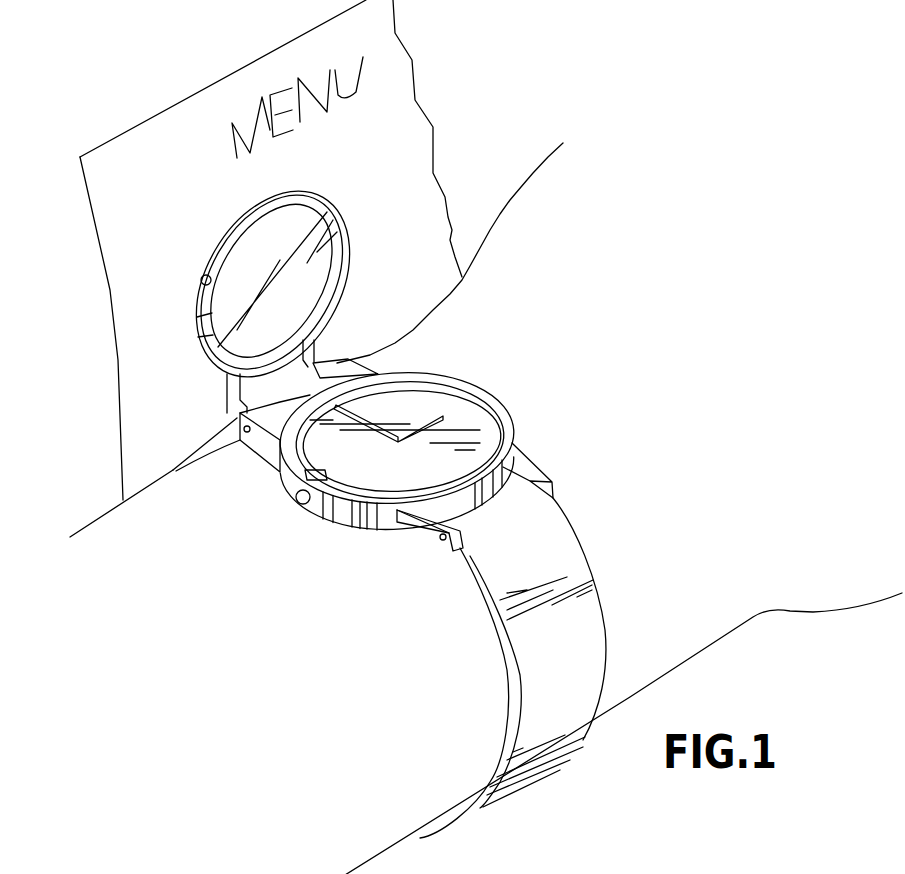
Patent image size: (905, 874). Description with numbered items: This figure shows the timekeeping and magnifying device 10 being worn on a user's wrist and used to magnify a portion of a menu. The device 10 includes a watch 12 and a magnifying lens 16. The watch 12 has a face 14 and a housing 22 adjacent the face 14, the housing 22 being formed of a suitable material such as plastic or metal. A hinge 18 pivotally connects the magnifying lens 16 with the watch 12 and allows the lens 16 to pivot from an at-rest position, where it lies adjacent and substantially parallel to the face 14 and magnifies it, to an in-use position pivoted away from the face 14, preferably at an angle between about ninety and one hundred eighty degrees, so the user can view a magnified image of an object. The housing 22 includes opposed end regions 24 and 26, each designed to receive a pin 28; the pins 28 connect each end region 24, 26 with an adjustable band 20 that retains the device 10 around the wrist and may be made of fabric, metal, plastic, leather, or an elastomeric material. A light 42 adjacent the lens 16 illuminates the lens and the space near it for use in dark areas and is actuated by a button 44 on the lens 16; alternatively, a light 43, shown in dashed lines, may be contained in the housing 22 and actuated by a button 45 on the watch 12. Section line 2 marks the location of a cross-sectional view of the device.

The timekeeping and magnifying device 10 is at (516, 370).
The watch 12 is at (512, 407).
The face 14 is at (455, 385).
The magnifying lens 16 is at (350, 207).
The hinge 18 is at (212, 415).
The adjustable band 20 is at (587, 553).
The housing 22 is at (373, 532).
The end region 24 is at (343, 358).
The end region 26 is at (533, 467).
The pin 28 is at (247, 433).
The light 42 is at (194, 324).
The light 43 is at (340, 525).
The button 44 is at (201, 279).
The button 45 is at (290, 508).
The section line 2 is at (105, 437).